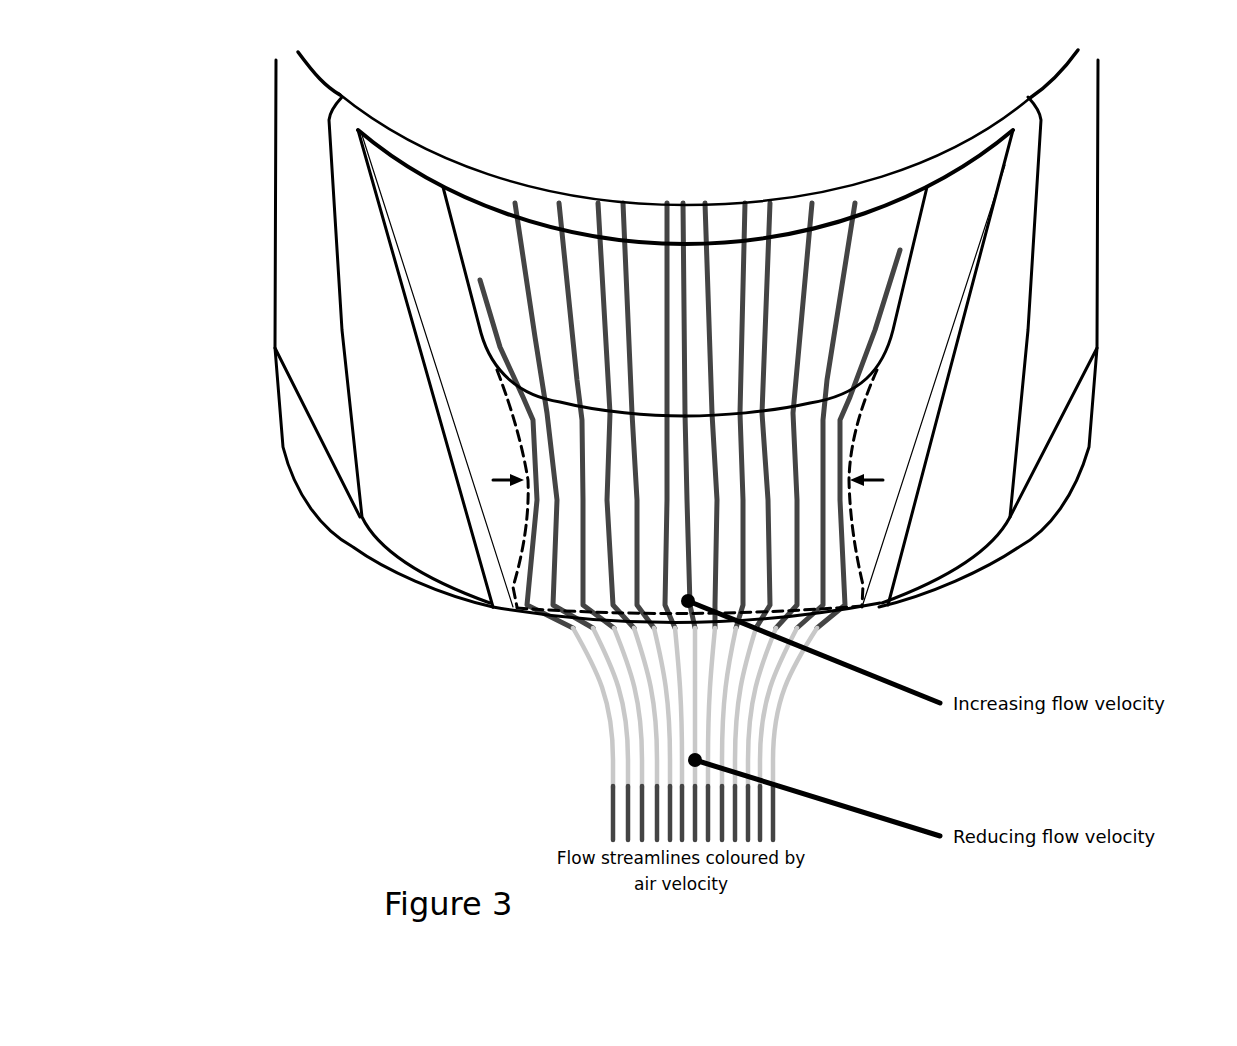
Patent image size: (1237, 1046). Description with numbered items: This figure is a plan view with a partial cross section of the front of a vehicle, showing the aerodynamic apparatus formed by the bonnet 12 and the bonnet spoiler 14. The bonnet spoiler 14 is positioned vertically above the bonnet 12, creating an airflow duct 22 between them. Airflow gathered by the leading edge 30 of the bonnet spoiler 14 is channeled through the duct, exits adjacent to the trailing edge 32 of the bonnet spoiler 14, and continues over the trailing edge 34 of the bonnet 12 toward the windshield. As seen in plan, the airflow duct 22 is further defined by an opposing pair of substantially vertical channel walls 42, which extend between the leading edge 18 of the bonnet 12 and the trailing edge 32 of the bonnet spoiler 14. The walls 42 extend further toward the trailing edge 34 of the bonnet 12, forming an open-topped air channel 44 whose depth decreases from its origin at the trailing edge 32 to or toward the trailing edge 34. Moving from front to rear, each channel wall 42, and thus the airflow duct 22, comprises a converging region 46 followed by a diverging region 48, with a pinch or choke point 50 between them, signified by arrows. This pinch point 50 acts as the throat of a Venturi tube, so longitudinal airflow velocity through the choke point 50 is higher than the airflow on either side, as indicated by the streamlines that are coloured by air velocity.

The bonnet 12 is at (880, 293).
The bonnet spoiler 14 is at (560, 507).
The leading edge of the bonnet 18 is at (530, 618).
The airflow duct 22 is at (770, 557).
The leading edge of the bonnet spoiler 30 is at (547, 618).
The trailing edge of the bonnet spoiler 32 is at (513, 380).
The trailing edge of the bonnet 34 is at (767, 190).
The channel walls 42 is at (855, 463).
The open-topped air channel 44 is at (645, 343).
The converging region 46 is at (863, 553).
The diverging region 48 is at (860, 418).
The pinch or choke point 50 is at (877, 480).